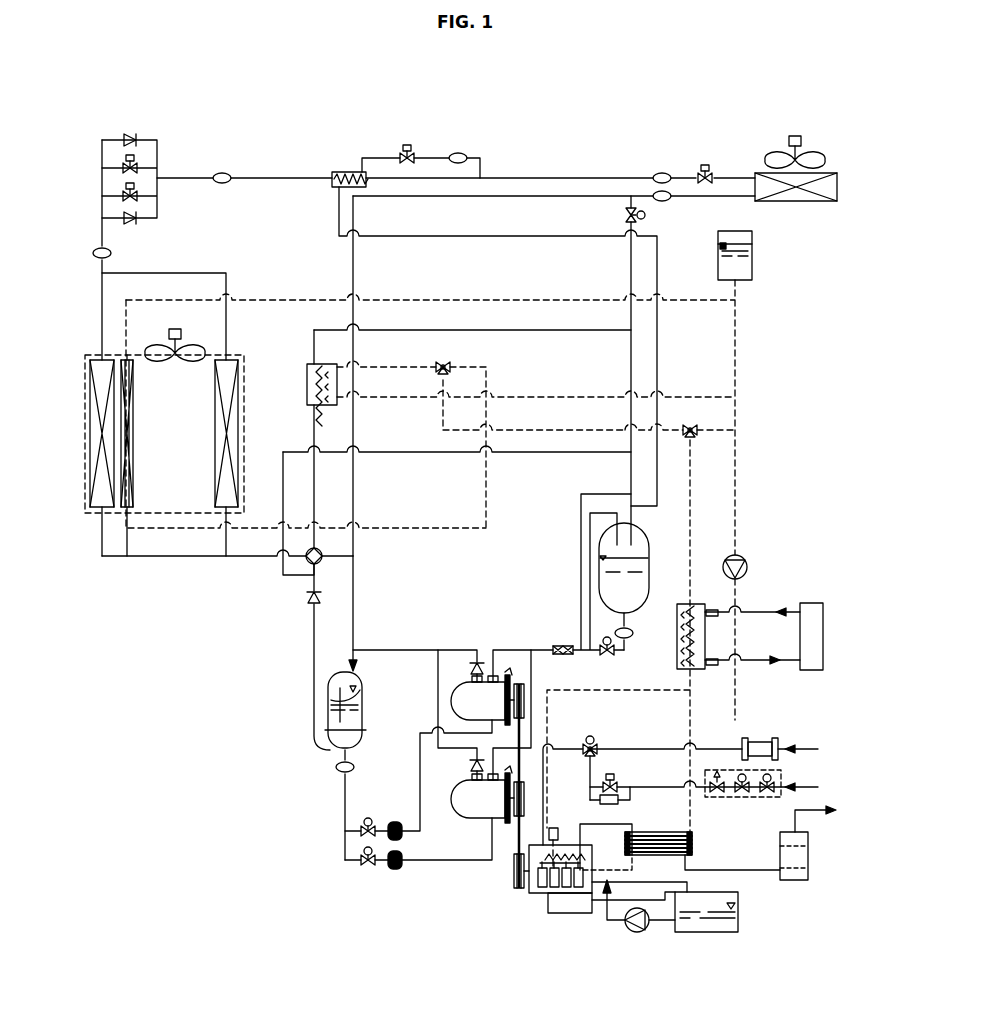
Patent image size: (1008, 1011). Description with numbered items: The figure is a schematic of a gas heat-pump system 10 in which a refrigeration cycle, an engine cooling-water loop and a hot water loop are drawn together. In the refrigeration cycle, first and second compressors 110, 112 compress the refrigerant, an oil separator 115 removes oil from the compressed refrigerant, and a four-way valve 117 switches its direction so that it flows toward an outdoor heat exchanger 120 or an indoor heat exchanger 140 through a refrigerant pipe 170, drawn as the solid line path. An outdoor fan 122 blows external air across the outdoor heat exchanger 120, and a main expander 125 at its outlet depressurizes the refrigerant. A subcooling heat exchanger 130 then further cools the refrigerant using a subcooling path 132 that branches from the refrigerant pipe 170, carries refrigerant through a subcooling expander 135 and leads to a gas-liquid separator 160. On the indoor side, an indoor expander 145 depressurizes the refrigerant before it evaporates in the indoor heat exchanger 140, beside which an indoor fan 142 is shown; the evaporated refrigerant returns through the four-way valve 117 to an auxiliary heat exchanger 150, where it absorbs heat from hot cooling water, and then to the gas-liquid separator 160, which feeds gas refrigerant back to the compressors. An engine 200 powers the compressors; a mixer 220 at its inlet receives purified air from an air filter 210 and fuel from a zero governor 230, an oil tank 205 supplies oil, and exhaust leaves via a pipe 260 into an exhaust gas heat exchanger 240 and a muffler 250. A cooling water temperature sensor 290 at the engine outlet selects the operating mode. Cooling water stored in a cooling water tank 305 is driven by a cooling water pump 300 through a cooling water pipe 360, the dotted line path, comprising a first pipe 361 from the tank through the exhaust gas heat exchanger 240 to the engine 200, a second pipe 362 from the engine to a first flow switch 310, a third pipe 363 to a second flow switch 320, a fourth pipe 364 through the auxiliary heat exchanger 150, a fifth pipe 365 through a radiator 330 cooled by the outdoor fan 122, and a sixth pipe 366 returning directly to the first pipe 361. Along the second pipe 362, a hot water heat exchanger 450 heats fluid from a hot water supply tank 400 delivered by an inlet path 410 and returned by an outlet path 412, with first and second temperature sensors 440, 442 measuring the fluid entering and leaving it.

The GHP system 10 is at (534, 109).
The first compressor 110 is at (466, 820).
The second compressor 112 is at (455, 685).
The oil separator 115 is at (328, 720).
The 4-way valve 117 is at (322, 562).
The outdoor heat exchanger 120 is at (90, 440).
The outdoor fan 122 is at (170, 329).
The main expander 125 is at (140, 166).
The subcooling heat exchanger 130 is at (341, 170).
The subcooling path 132 is at (458, 152).
The subcooling expander 135 is at (408, 153).
The indoor heat exchanger 140 is at (796, 202).
The indoor fan 142 is at (795, 135).
The indoor expander 145 is at (705, 164).
The auxiliary heat exchanger 150 is at (306, 385).
The gas-liquid separator 160 is at (598, 570).
The refrigerant pipe 170 is at (173, 558).
The engine 200 is at (540, 914).
The oil tank 205 is at (706, 933).
The air filter 210 is at (757, 738).
The mixer 220 is at (590, 736).
The zero governor 230 is at (782, 770).
The exhaust gas heat exchanger 240 is at (693, 845).
The muffler 250 is at (793, 881).
The pipe 260 is at (588, 824).
The cooling water temperature sensor 290 is at (513, 878).
The cooling water pump 300 is at (750, 566).
The cooling water tank 305 is at (753, 262).
The first flow switch 310 is at (690, 423).
The second flow switch 320 is at (448, 363).
The radiator 330 is at (137, 509).
The cooling water pipe 360 is at (607, 900).
The first pipe 361 is at (737, 311).
The second pipe 362 is at (691, 463).
The third pipe 363 is at (522, 433).
The fourth pipe 364 is at (392, 366).
The fifth pipe 365 is at (306, 432).
The sixth pipe 366 is at (736, 430).
The hot water supply tank 400 is at (824, 640).
The inlet path 410 is at (765, 611).
The outlet path 412 is at (790, 662).
The first temperature sensor 440 is at (713, 609).
The second temperature sensor 442 is at (713, 666).
The hot water heat exchanger 450 is at (677, 632).